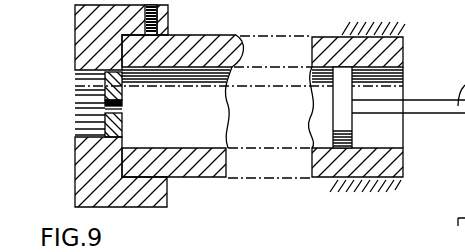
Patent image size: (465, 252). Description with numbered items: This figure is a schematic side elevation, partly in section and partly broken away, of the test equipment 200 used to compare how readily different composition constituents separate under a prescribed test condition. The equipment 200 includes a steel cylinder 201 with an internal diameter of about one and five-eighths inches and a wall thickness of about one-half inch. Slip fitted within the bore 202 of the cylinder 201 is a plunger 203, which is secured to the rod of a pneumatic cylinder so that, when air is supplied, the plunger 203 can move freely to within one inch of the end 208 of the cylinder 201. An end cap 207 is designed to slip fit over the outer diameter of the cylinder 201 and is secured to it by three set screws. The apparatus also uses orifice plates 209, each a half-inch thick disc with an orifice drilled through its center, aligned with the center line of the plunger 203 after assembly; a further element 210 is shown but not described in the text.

The equipment 200 is at (297, 184).
The steel cylinder 201 is at (205, 47).
The bore 202 is at (208, 68).
The plunger 203 is at (350, 130).
The end cap 207 is at (87, 23).
The end 208 is at (122, 53).
The orifice plates 209 is at (107, 125).
The lock washer 210 is at (104, 108).